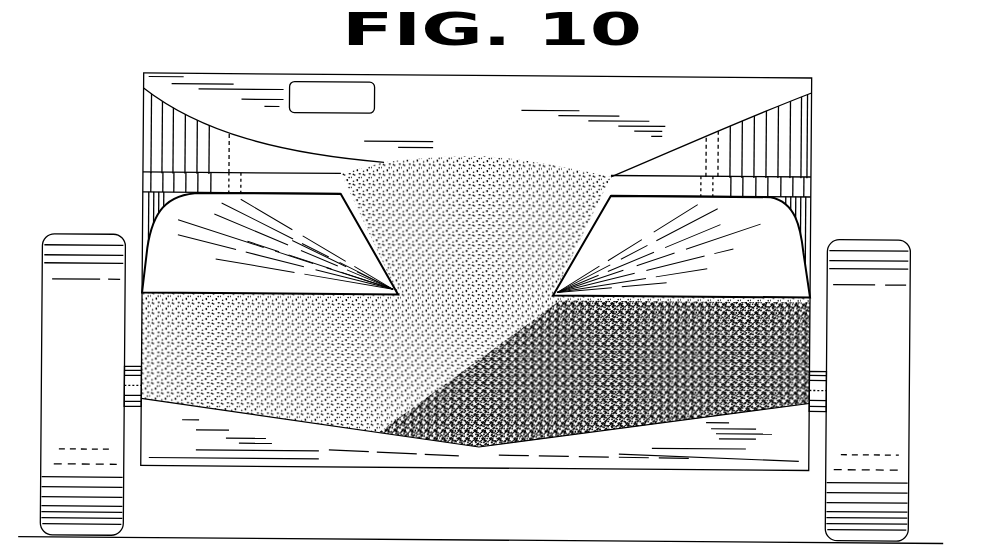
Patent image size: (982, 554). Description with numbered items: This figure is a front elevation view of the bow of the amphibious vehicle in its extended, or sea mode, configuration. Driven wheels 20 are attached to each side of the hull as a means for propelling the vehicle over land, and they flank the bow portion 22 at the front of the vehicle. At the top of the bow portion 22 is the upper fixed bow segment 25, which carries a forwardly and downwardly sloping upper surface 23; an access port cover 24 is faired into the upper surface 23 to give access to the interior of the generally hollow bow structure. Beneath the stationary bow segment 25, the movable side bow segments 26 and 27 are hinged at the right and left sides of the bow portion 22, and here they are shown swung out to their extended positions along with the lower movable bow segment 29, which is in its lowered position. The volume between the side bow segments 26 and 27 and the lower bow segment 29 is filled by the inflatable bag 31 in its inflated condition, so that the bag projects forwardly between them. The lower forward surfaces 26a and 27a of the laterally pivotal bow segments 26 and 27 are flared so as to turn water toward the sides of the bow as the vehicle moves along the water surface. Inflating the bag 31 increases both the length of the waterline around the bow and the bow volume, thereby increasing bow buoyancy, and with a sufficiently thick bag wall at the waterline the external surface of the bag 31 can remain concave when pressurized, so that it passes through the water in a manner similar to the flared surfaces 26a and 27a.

The driven wheels 20 is at (97, 386).
The bow portion 22 is at (814, 154).
The upper surface 23 is at (507, 134).
The access port cover 24 is at (363, 93).
The upper fixed bow segment 25 is at (810, 110).
The movable side bow segment 26 is at (150, 198).
The lower forward surface 26a is at (232, 290).
The movable side bow segment 27 is at (810, 194).
The lower forward surface 27a is at (778, 283).
The lower movable bow segment 29 is at (636, 464).
The inflatable bag 31 is at (477, 450).